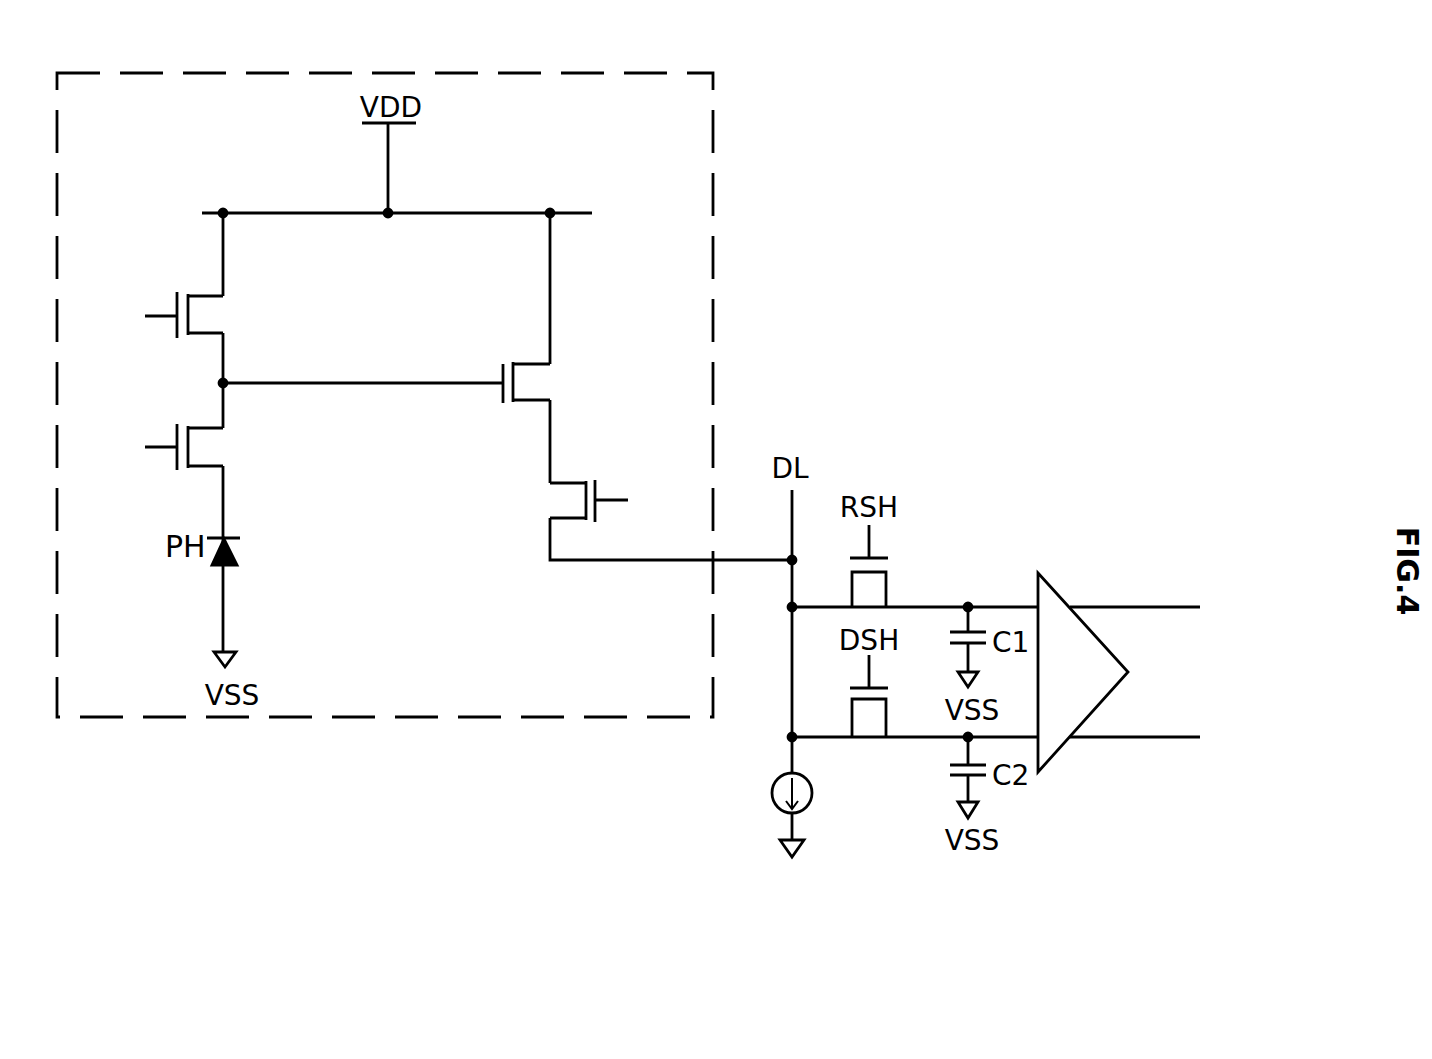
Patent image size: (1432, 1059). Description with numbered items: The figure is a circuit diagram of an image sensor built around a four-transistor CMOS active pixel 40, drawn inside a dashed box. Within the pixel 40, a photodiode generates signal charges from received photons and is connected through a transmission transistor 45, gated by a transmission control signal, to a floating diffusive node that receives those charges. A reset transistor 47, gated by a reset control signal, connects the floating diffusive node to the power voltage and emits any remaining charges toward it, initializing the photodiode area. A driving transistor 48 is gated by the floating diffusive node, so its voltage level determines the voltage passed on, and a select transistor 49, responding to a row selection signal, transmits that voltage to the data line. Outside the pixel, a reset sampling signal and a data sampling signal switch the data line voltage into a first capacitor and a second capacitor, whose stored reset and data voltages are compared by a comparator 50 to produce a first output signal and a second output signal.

The 4-transistor CMOS active pixel 40 is at (388, 717).
The transmission transistor 45 is at (205, 443).
The reset transistor 47 is at (205, 312).
The driving transistor 48 is at (530, 380).
The select transistor 49 is at (572, 488).
The comparator 50 is at (1058, 602).